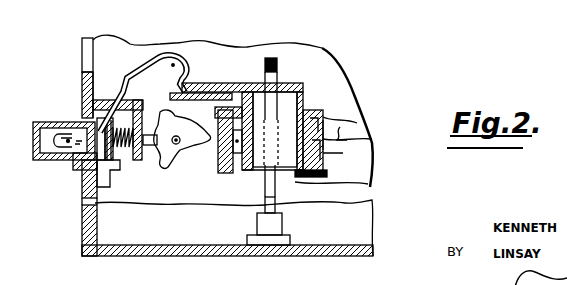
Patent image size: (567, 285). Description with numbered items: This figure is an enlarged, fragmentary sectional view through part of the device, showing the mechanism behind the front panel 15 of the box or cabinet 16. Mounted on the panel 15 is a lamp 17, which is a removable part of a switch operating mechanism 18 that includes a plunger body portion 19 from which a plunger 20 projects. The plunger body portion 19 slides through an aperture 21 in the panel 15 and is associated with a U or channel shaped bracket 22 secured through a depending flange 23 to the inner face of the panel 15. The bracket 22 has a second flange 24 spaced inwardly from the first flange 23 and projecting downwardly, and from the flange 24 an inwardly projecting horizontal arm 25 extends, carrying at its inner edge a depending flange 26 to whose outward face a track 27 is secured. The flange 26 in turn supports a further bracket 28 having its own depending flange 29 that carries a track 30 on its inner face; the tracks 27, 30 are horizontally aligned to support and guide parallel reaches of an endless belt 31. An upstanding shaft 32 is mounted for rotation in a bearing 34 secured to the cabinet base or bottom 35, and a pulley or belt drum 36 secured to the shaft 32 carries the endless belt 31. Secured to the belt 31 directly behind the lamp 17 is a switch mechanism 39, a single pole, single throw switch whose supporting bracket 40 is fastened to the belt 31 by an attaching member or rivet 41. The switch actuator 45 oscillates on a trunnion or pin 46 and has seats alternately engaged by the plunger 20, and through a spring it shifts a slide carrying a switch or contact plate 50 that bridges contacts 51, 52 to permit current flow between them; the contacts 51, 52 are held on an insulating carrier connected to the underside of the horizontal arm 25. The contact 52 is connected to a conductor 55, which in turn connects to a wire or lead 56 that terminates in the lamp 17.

The panel 15 is at (82, 68).
The cabinet 16 is at (383, 27).
The lamp 17 is at (84, 156).
The switch operating mechanism 18 is at (60, 95).
The plunger body portion 19 is at (120, 160).
The plunger 20 is at (143, 158).
The aperture 21 is at (85, 185).
The bracket 22 is at (107, 97).
The depending flange 23 is at (100, 200).
The second flange 24 is at (147, 118).
The horizontal arm 25 is at (232, 83).
The depending flange 26 is at (250, 170).
The track 27 is at (236, 178).
The further bracket 28 is at (305, 84).
The depending flange 29 is at (331, 168).
The track 30 is at (308, 110).
The endless belt 31 is at (207, 153).
The shaft 32 is at (276, 66).
The bearing 34 is at (273, 227).
The cabinet base or bottom 35 is at (167, 256).
The pulley or belt drum 36 is at (343, 120).
The switch mechanism 39 is at (212, 144).
The supporting bracket 40 is at (184, 153).
The attaching member 41 is at (373, 137).
The switch actuator 45 is at (162, 160).
The trunnion or pin 46 is at (161, 165).
The switch or contact plate 50 is at (272, 131).
The contact 51 is at (240, 83).
The contact 52 is at (209, 82).
The conductor 55 is at (192, 80).
The wire or lead 56 is at (158, 48).